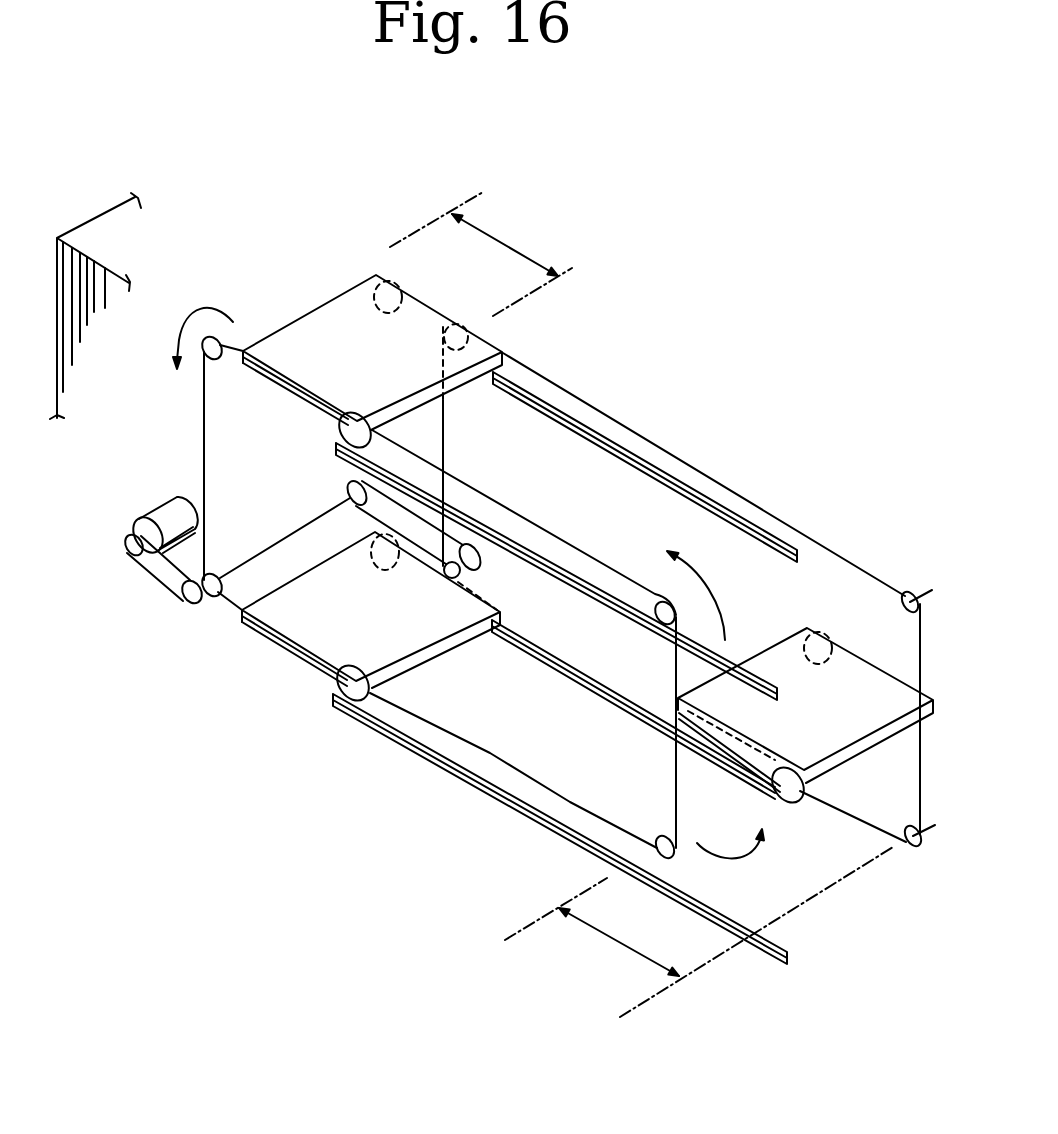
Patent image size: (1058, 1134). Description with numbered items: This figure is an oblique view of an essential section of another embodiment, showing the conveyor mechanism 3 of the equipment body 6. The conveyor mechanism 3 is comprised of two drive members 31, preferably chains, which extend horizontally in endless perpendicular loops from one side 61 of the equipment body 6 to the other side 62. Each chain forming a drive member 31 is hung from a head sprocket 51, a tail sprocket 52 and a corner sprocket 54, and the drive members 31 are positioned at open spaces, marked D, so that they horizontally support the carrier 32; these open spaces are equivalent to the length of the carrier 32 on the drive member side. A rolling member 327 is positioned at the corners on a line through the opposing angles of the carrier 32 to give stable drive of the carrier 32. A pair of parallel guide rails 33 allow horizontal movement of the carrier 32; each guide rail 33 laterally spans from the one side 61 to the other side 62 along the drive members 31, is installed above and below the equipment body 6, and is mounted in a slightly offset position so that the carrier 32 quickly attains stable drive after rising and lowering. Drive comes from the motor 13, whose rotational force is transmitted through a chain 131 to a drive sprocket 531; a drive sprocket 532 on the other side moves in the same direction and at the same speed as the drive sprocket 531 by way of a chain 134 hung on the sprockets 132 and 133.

The conveyor mechanism 3 is at (742, 432).
The equipment body 6 is at (100, 219).
The motor 13 is at (170, 498).
The drive member 31 is at (763, 505).
The carrier 32 is at (302, 314).
The guide rail 33 is at (582, 420).
The head sprocket 51 is at (660, 603).
The tail sprocket 52 is at (462, 345).
The corner sprocket 54 is at (660, 840).
The one side of the equipment body 61 is at (877, 558).
The other side of the equipment body 62 is at (366, 258).
The chain 131 is at (147, 572).
The sprocket 132 is at (350, 493).
The sprocket 133 is at (480, 562).
The chain 134 is at (362, 478).
The rolling member 327 is at (400, 306).
The drive sprocket 531 is at (215, 572).
The drive sprocket 532 is at (470, 580).